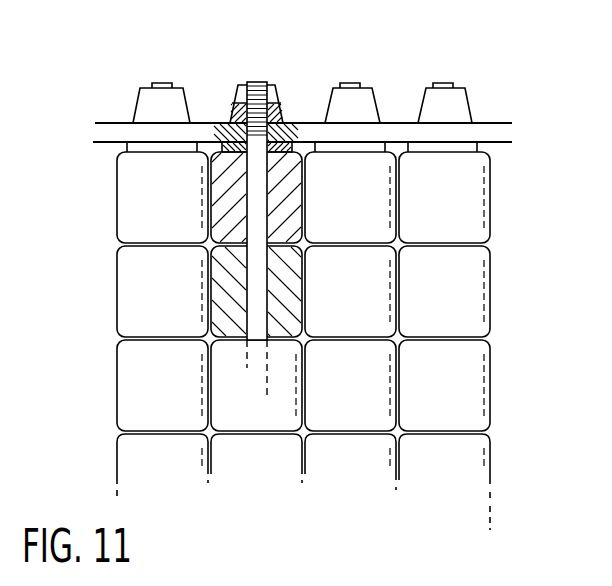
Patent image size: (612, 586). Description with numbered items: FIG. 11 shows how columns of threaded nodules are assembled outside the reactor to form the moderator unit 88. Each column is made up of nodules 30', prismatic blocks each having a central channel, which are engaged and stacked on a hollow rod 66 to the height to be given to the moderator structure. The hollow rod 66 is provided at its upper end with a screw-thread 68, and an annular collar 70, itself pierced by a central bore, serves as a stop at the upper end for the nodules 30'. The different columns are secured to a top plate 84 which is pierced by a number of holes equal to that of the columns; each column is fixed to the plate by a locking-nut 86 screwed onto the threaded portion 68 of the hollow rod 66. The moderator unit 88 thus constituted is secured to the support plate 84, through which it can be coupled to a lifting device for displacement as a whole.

The nodule 30' is at (182, 244).
The hollow rod 66 is at (253, 177).
The screw-thread 68 is at (251, 82).
The annular collar 70 is at (298, 150).
The top plate 84 is at (308, 128).
The locking-nut 86 is at (278, 103).
The moderator unit 88 is at (90, 312).